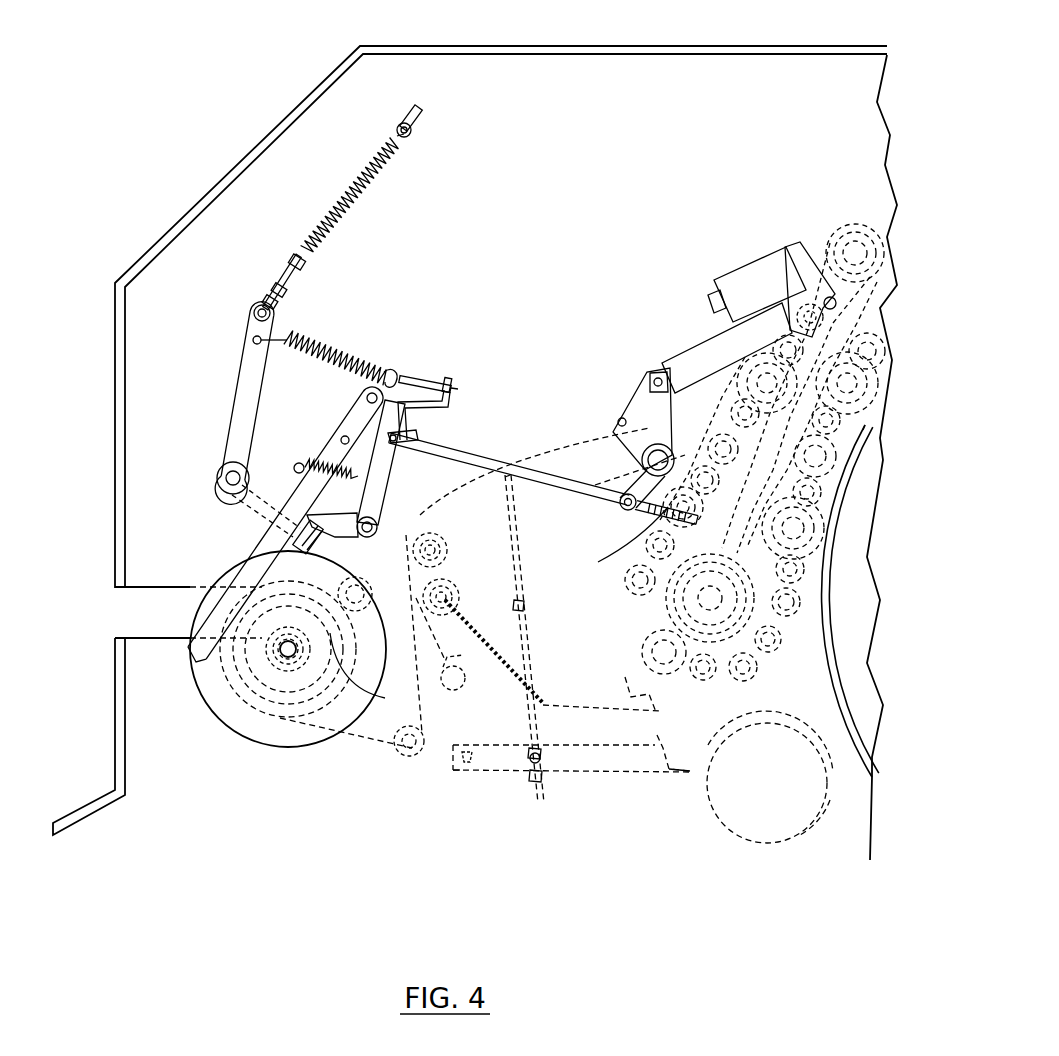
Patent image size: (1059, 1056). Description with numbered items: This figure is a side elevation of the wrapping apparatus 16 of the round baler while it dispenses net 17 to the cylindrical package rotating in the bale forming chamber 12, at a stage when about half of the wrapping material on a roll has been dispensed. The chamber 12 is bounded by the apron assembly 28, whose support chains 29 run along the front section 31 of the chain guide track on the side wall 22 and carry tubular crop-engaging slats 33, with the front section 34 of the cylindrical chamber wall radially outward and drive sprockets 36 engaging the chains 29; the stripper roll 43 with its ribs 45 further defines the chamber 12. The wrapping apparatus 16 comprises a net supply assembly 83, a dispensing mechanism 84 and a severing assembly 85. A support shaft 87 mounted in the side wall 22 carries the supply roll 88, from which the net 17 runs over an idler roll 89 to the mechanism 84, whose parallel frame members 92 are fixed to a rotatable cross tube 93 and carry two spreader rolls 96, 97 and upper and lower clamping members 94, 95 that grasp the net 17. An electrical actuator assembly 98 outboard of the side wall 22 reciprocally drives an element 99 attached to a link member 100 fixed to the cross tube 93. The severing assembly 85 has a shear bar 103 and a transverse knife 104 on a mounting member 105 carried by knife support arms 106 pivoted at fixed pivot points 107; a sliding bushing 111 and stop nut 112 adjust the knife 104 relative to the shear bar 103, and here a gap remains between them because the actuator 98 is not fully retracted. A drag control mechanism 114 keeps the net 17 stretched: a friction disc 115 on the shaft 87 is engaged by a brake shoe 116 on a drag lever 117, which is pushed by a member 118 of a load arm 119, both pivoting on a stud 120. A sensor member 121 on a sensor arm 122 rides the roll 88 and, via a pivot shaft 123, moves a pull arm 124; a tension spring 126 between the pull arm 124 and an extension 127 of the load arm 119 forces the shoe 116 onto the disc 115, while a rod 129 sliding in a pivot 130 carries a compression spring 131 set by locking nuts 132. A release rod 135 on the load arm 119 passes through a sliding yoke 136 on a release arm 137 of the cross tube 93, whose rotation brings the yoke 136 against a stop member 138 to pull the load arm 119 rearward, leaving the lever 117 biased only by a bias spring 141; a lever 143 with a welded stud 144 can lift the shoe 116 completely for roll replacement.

The bale forming chamber 12 is at (866, 607).
The wrapping apparatus 16 is at (193, 126).
The net 17 is at (360, 745).
The side wall 22 is at (660, 85).
The apron assembly 28 is at (872, 356).
The support chains 29 is at (815, 455).
The front section of chain guide track 31 is at (835, 531).
The crop-engaging slats 33 is at (862, 390).
The front section of bale chamber wall 34 is at (860, 298).
The drive sprockets 36 is at (745, 633).
The stripper roll 43 is at (805, 793).
The ribs 45 is at (790, 840).
The net supply assembly 83 is at (211, 752).
The dispensing mechanism 84 is at (555, 371).
The severing assembly 85 is at (570, 805).
The support shaft 87 is at (279, 648).
The supply roll 88 is at (268, 662).
The idler roll 89 is at (408, 756).
The frame members 92 is at (565, 455).
The cross tube 93 is at (645, 458).
The upper clamping member 94 is at (513, 668).
The lower clamping member 95 is at (468, 690).
The spreader roll 96 is at (436, 554).
The spreader roll 97 is at (448, 598).
The electrical actuator assembly 98 is at (740, 292).
The reciprocally driven element 99 is at (656, 375).
The link member 100 is at (660, 418).
The shear bar 103 is at (625, 678).
The knife 104 is at (665, 736).
The mounting member 105 is at (680, 772).
The knife support arms 106 is at (607, 772).
The fixed pivot points 107 is at (466, 764).
The sliding bushing 111 is at (528, 770).
The stop nut 112 is at (532, 787).
The drag control mechanism 114 is at (221, 335).
The friction disc 115 is at (262, 746).
The brake shoe 116 is at (300, 540).
The drag lever 117 is at (333, 538).
The member of load arm 118 is at (418, 432).
The load arm 119 is at (385, 470).
The stud 120 is at (378, 525).
The sensor member 121 is at (330, 640).
The sensor arm 122 is at (240, 498).
The pivot shaft 123 is at (216, 476).
The pull arm 124 is at (240, 388).
The tension spring 126 is at (355, 345).
The extension of load arm 127 is at (450, 380).
The rod 129 is at (290, 282).
The pivot 130 is at (397, 128).
The compression spring 131 is at (352, 206).
The locking nuts 132 is at (292, 262).
The release rod 135 is at (498, 445).
The sliding yoke 136 is at (640, 512).
The release arm 137 is at (619, 503).
The stop member 138 is at (620, 555).
The bias spring 141 is at (330, 465).
The lever 143 is at (275, 605).
The stud 144 is at (346, 432).